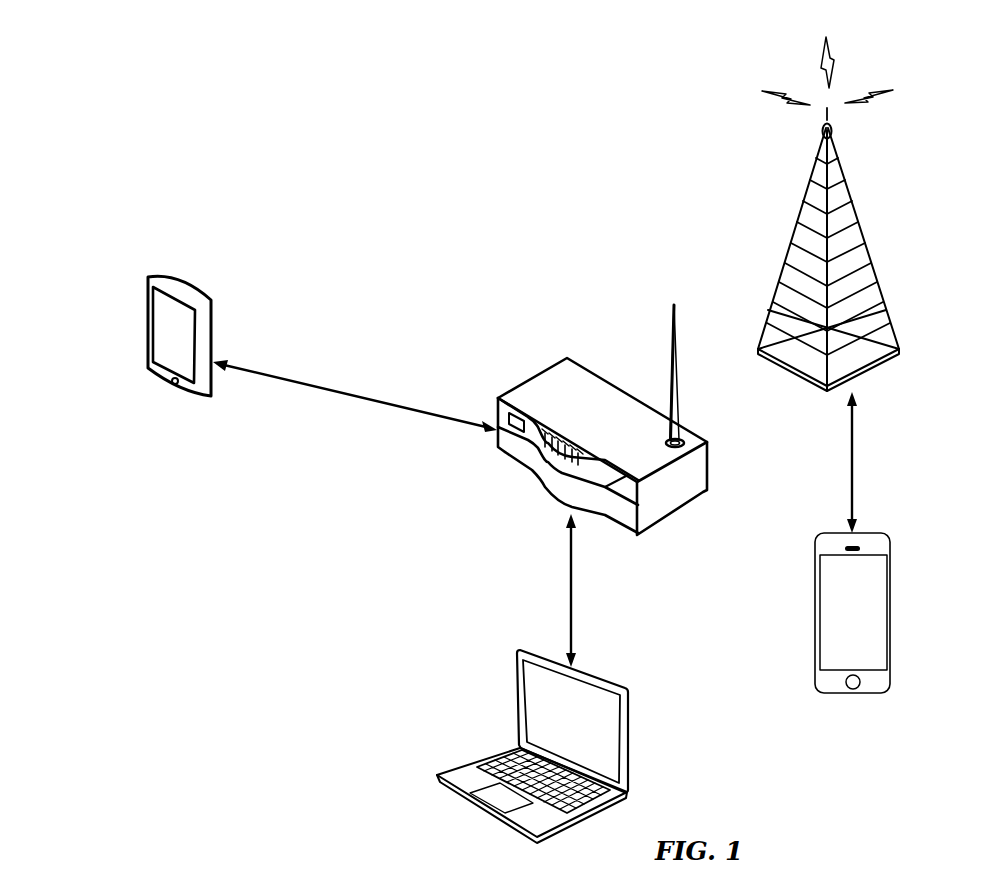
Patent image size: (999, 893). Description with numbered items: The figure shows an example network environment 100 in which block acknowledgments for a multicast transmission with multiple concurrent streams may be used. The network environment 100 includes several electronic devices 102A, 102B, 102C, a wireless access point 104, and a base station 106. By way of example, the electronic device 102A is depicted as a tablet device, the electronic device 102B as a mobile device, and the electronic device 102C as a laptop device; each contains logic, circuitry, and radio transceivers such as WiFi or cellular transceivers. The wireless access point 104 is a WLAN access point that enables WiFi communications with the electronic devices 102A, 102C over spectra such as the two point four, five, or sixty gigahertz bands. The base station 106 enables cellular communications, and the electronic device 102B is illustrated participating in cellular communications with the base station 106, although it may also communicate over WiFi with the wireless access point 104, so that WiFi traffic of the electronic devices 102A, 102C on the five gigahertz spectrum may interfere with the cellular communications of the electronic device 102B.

The network environment 100 is at (210, 110).
The electronic device 102A is at (147, 289).
The electronic device 102B is at (892, 612).
The electronic device 102C is at (513, 698).
The wireless access point 104 is at (607, 378).
The base station 106 is at (875, 272).